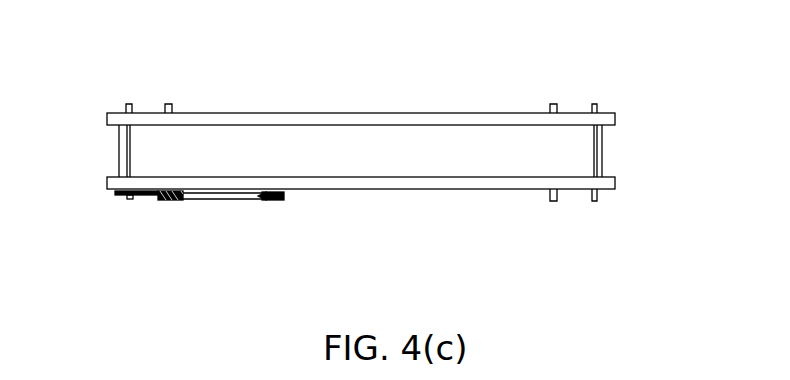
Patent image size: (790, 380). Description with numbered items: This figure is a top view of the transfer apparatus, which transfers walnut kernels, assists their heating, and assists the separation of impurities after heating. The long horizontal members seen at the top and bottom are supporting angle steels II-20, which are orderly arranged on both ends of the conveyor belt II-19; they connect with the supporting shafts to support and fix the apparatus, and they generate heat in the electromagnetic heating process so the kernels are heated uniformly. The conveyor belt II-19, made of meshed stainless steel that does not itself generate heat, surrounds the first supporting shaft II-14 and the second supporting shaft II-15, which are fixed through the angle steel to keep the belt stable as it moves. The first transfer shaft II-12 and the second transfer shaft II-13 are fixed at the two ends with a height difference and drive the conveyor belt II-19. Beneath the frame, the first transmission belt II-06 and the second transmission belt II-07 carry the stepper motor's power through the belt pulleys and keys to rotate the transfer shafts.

The transfer shaft 1 II-12 is at (129, 103).
The transfer shaft 2 II-13 is at (267, 57).
The supporting angle steel II-20 is at (271, 123).
The conveyor belt II-19 is at (377, 146).
The supporting shaft 2 II-15 is at (552, 103).
The supporting shaft 1 II-14 is at (692, 57).
The transmission belt 1 II-06 is at (148, 195).
The transmission belt 2 II-07 is at (212, 200).